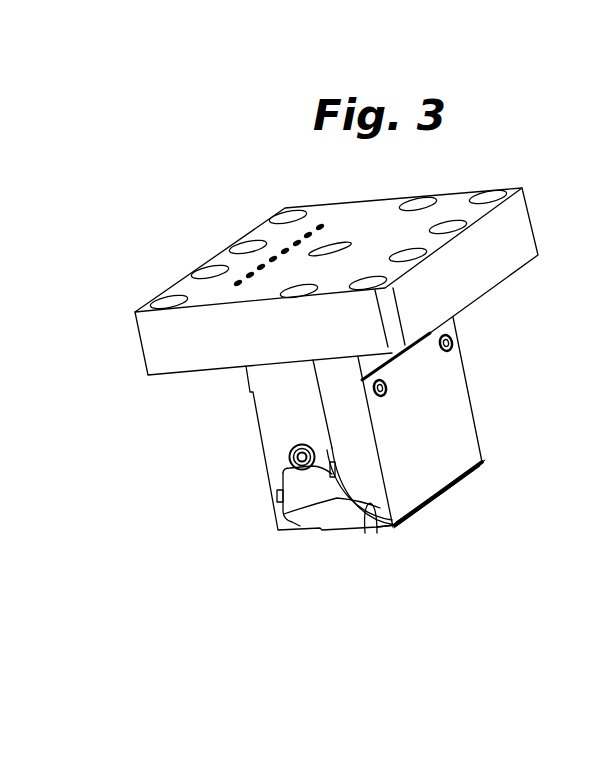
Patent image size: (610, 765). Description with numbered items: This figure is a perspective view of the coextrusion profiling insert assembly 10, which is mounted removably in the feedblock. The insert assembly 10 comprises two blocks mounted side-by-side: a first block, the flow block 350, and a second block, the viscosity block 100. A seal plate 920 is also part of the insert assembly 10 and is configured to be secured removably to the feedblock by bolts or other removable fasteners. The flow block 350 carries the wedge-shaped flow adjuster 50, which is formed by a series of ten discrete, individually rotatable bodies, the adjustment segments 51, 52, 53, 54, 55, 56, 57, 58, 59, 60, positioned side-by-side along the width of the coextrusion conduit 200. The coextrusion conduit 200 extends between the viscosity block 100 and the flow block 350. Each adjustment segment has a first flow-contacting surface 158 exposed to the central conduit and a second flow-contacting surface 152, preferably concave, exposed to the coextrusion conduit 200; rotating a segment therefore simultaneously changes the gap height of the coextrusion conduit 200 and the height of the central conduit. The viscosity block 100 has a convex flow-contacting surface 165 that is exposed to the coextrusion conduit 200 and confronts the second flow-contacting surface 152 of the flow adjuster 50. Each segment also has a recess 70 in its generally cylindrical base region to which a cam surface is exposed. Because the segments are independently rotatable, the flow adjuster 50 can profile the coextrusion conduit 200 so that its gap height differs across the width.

The coextrusion profiling insert assembly 10 is at (357, 182).
The seal plate 920 is at (181, 285).
The flow block 350 is at (270, 427).
The viscosity block 100 is at (458, 387).
The adjustment segment 60 is at (487, 467).
The adjustment segment 59 is at (473, 472).
The adjustment segment 58 is at (468, 479).
The adjustment segment 57 is at (458, 488).
The adjustment segment 56 is at (443, 508).
The adjustment segment 55 is at (428, 515).
The adjustment segment 54 is at (417, 520).
The adjustment segment 53 is at (405, 530).
The adjustment segment 52 is at (407, 532).
The adjustment segment 51 is at (394, 528).
The wedge-shaped flow adjuster 50 is at (320, 538).
The recess 70 is at (283, 494).
The convex flow-contacting surface 165 is at (290, 528).
The first flow-contacting surface 158 is at (362, 530).
The second flow-contacting surface 152 is at (372, 532).
The coextrusion conduit 200 is at (383, 527).